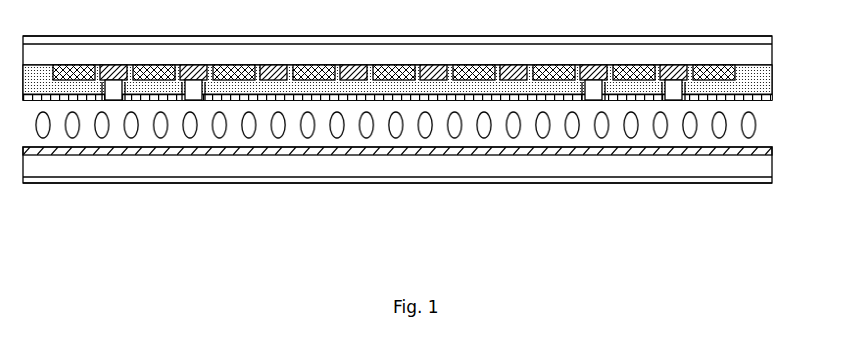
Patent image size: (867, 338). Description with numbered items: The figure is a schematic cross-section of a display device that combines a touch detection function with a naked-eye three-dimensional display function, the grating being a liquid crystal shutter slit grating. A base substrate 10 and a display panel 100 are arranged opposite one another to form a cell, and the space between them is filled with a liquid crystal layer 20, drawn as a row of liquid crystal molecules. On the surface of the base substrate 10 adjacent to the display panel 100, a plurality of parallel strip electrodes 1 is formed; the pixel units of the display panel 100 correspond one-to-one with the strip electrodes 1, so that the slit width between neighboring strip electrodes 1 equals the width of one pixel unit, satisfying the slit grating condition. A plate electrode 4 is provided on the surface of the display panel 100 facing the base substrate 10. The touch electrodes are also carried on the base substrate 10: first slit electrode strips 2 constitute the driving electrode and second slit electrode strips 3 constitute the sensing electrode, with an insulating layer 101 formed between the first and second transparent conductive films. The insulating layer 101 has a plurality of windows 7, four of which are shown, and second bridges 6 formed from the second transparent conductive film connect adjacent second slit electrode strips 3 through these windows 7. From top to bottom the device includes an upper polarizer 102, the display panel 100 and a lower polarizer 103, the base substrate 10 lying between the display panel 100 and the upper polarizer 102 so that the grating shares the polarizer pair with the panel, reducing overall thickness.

The strip electrodes 1 is at (238, 65).
The first slit electrode strips 2 is at (360, 65).
The second slit electrode strips 3 is at (597, 66).
The plate electrode 4 is at (772, 150).
The second bridges 6 is at (447, 98).
The windows 7 is at (674, 105).
The base substrate 10 is at (755, 57).
The liquid crystal layer 20 is at (755, 125).
The display panel 100 is at (755, 165).
The insulating layer 101 is at (755, 81).
The upper polarizer 102 is at (755, 42).
The lower polarizer 103 is at (755, 181).